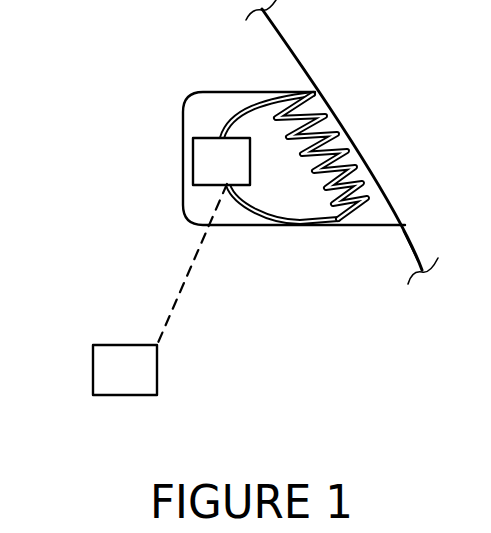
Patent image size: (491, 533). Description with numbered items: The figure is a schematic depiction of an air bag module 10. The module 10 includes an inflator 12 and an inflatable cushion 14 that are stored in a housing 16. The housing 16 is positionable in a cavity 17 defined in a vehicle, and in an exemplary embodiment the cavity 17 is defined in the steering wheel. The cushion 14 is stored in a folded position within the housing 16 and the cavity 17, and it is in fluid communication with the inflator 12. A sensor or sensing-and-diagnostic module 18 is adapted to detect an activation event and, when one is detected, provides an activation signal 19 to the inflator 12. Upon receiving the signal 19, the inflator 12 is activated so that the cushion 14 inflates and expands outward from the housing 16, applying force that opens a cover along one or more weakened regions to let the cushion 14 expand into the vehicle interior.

The air bag module 10 is at (131, 94).
The inflator 12 is at (193, 157).
The inflatable cushion 14 is at (338, 140).
The housing 16 is at (298, 227).
The cavity 17 is at (242, 91).
The sensing-and-diagnostic module 18 is at (128, 395).
The activation signal 19 is at (177, 294).